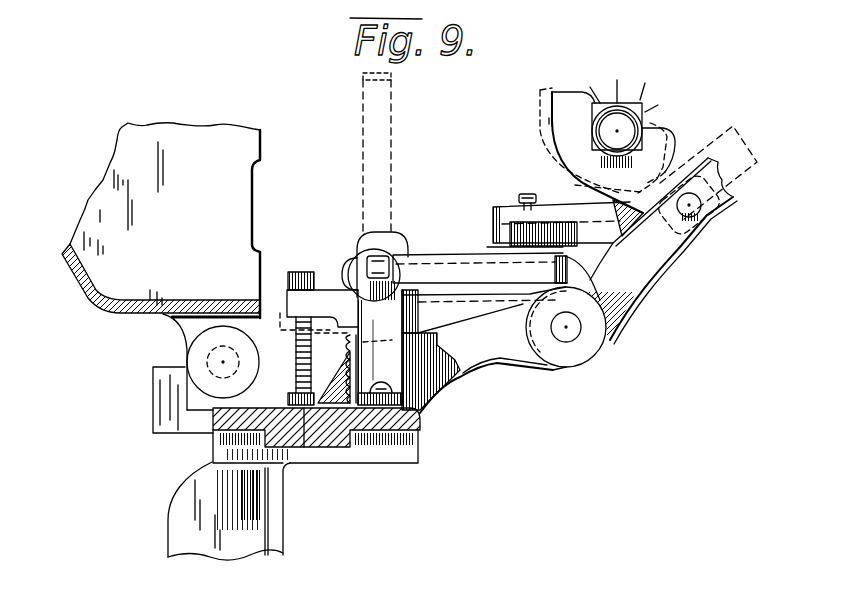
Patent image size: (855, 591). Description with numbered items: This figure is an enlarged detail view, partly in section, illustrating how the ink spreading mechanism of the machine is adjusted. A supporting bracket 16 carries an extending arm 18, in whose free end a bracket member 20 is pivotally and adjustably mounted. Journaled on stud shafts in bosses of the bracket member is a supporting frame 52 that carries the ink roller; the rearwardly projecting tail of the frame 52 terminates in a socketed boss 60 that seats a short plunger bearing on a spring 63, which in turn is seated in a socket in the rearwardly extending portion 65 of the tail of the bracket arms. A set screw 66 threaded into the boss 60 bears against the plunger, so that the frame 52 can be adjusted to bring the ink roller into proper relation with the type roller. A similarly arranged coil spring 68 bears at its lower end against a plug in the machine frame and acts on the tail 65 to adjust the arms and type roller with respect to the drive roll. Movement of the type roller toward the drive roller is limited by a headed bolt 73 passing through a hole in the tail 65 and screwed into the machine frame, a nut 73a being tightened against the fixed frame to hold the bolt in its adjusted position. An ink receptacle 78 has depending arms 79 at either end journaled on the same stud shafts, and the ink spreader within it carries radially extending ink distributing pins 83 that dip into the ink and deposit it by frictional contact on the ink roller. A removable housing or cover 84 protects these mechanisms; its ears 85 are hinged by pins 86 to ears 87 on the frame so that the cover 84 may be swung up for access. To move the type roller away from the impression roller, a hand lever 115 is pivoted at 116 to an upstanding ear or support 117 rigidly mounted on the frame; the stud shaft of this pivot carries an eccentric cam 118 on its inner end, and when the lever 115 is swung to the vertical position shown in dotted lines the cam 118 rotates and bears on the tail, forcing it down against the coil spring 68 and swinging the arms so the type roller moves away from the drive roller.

The supporting bracket 16 is at (418, 414).
The extending arm 18 is at (497, 350).
The bracket member 20 is at (681, 249).
The supporting frame 52 is at (605, 210).
The socketed boss 60 is at (492, 230).
The spring 63 is at (500, 256).
The rearwardly extending portion 65 is at (428, 297).
The set screw 66 is at (520, 200).
The coil spring 68 is at (348, 360).
The headed bolt 73 is at (296, 368).
The nut 73a is at (306, 407).
The ink receptacle 78 is at (548, 125).
The depending arm 79 is at (703, 142).
The ink distributing pin 83 is at (660, 112).
The housing or cover 84 is at (161, 220).
The ear 85 is at (185, 330).
The pin 86 is at (215, 362).
The ear 87 is at (190, 398).
The hand lever 115 is at (362, 134).
The pivot 116 is at (375, 262).
The upstanding ear or support 117 is at (390, 323).
The eccentric cam 118 is at (385, 233).